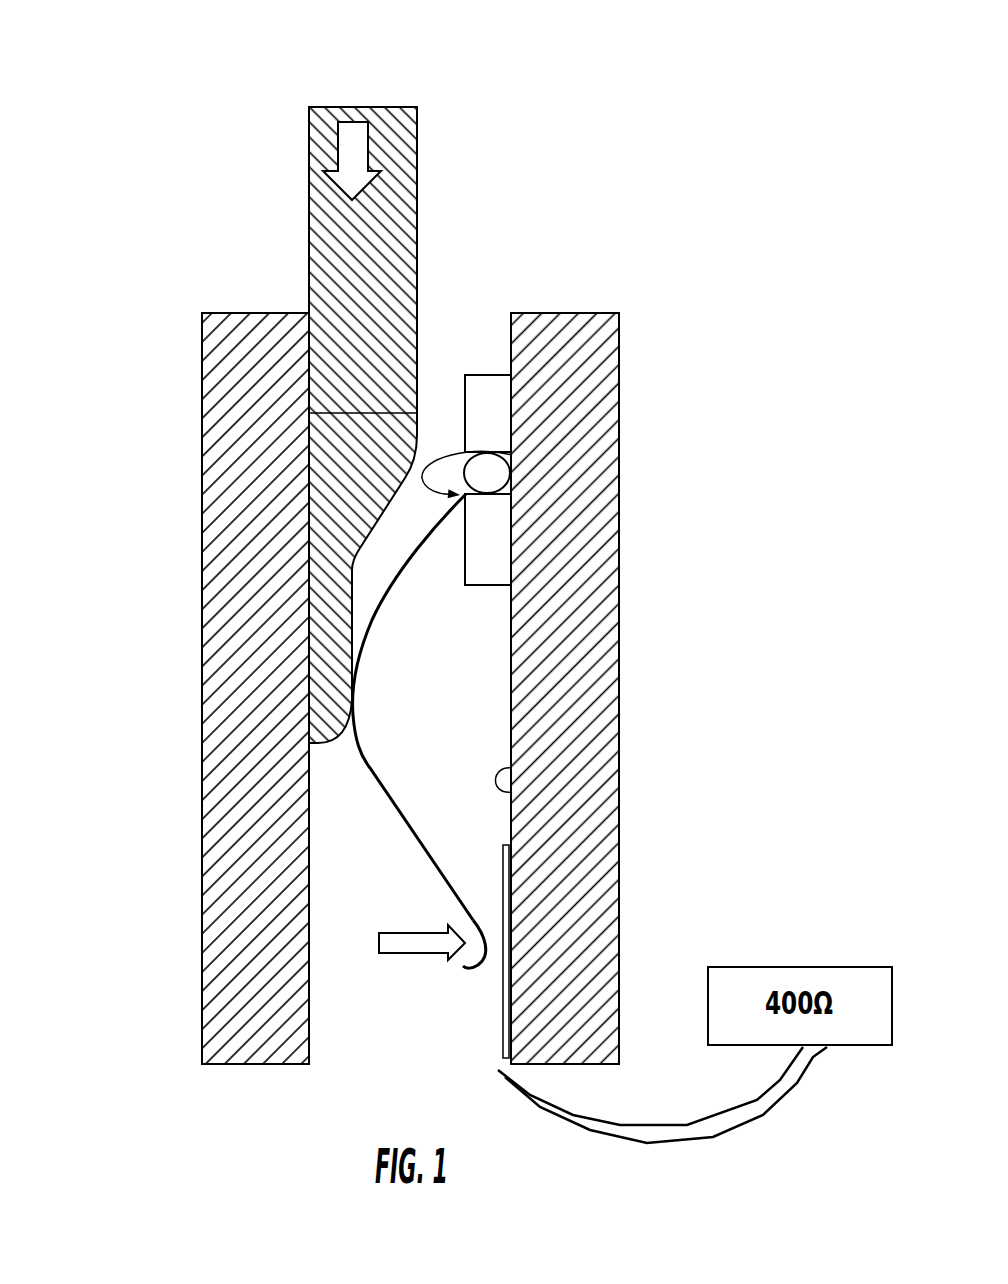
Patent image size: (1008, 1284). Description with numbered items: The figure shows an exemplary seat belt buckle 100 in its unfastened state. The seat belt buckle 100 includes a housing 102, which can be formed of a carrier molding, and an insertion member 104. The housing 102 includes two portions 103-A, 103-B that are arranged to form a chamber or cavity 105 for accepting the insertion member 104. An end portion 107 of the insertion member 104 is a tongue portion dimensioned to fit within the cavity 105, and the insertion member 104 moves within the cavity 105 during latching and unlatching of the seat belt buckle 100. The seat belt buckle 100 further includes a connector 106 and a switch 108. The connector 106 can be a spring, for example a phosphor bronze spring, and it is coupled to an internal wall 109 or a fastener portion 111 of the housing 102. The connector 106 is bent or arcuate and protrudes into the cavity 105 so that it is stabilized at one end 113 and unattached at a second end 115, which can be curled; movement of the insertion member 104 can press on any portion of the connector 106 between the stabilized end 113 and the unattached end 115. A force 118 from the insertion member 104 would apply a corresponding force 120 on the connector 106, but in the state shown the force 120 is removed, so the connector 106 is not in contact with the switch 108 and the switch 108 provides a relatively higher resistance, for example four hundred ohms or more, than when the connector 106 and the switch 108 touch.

The seat belt buckle 100 is at (155, 120).
The housing 102 is at (622, 688).
The housing portion 103-A is at (213, 781).
The housing portion 103-B is at (619, 722).
The insertion member 104 is at (280, 425).
The cavity 105 is at (357, 830).
The connector 106 is at (375, 703).
The end portion 107 is at (324, 703).
The switch 108 is at (505, 903).
The internal wall 109 is at (512, 768).
The fastener portion 111 is at (487, 375).
The stabilized end 113 is at (515, 455).
The unattached end 115 is at (468, 983).
The force 118 is at (351, 131).
The force 120 is at (392, 945).